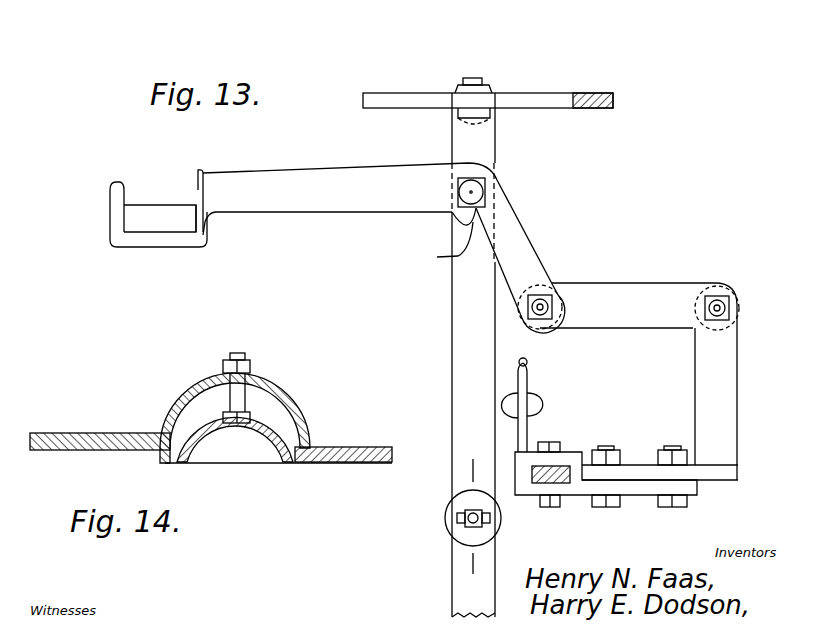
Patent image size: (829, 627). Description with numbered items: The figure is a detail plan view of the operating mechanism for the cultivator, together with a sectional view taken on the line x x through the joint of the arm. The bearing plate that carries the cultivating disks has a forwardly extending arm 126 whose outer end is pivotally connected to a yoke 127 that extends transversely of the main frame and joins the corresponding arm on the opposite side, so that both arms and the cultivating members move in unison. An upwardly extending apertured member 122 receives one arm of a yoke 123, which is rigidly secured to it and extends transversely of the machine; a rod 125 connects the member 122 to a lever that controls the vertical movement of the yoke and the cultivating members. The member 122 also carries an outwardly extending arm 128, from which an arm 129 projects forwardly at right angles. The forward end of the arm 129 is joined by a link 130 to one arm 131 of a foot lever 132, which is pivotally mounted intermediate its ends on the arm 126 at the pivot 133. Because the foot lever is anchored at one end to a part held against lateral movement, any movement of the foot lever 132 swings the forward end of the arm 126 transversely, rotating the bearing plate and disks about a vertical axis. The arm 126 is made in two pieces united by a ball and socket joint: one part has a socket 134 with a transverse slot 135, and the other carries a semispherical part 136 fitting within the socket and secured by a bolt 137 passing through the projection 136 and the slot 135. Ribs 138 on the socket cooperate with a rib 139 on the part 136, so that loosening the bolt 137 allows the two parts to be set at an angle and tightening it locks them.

In FIG. 13, the apertured member 122 is at (573, 488).
In FIG. 13, the yoke 123 is at (553, 468).
In FIG. 13, the rod 125 is at (528, 374).
In FIG. 13, the arm 126 is at (452, 373).
In FIG. 14, the arm 126 is at (376, 463).
In FIG. 13, the yoke 127 is at (548, 82).
In FIG. 13, the arm 128 is at (640, 466).
In FIG. 13, the arm 129 is at (705, 368).
In FIG. 13, the link 130 is at (632, 285).
In FIG. 13, the arm of foot lever 131 is at (490, 182).
In FIG. 13, the foot lever 132 is at (272, 170).
In FIG. 13, the pivot 133 is at (432, 245).
In FIG. 14, the socket 134 is at (243, 405).
In FIG. 13, the transverse slot 135 is at (462, 525).
In FIG. 14, the semispherical part 136 is at (283, 445).
In FIG. 13, the bolt 137 is at (465, 513).
In FIG. 14, the bolt 137 is at (238, 352).
In FIG. 14, the ribs 138 is at (172, 424).
In FIG. 14, the rib 139 is at (306, 410).